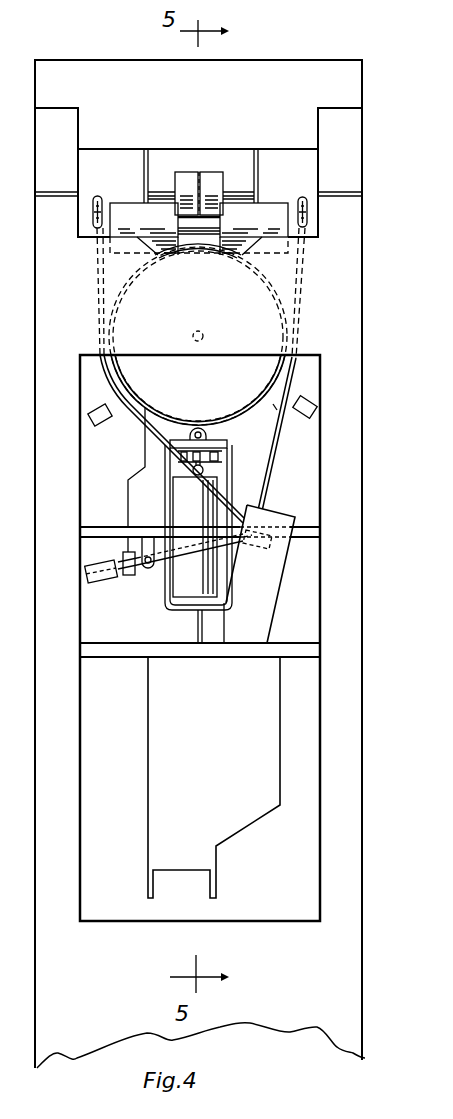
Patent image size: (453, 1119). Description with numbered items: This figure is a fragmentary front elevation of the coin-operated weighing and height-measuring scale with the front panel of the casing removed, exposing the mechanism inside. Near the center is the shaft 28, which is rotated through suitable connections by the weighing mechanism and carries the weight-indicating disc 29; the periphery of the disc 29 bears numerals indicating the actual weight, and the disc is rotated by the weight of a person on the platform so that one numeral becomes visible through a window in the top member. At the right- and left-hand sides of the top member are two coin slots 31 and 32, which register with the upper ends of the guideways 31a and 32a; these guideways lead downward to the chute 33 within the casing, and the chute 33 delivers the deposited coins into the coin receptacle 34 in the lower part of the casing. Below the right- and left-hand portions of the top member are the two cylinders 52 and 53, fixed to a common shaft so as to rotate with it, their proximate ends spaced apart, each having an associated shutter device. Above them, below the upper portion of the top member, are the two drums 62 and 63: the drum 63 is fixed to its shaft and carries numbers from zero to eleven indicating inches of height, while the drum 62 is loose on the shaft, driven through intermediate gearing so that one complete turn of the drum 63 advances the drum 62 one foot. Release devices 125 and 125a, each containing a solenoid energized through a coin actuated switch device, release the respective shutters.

The shaft 28 is at (204, 332).
The weight-indicating disc 29 is at (212, 397).
The coin slot 31 is at (309, 212).
The guideway 31a is at (312, 270).
The coin slot 32 is at (94, 218).
The guideway 32a is at (99, 310).
The chute 33 is at (277, 520).
The coin receptacle 34 is at (268, 703).
The cylinder 52 is at (124, 205).
The cylinder 53 is at (266, 210).
The drum 62 is at (186, 172).
The drum 63 is at (211, 172).
The release device 125 is at (93, 428).
The release device 125a is at (312, 396).